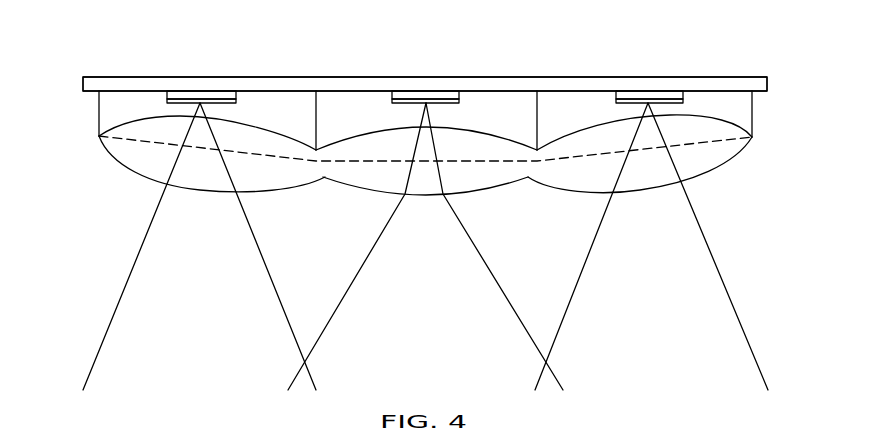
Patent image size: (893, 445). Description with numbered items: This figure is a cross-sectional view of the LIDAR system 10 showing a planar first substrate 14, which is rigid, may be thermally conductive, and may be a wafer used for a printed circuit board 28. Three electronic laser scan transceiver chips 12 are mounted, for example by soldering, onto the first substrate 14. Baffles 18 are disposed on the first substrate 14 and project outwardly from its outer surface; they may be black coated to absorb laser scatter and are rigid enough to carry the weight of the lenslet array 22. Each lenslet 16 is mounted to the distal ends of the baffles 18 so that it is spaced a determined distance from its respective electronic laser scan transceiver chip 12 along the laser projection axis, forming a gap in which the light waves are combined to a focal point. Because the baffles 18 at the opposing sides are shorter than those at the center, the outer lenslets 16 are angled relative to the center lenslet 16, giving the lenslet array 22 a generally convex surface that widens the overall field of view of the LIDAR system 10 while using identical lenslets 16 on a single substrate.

The LIDAR system 10 is at (700, 62).
The electronic laser scan transceiver chip 12 is at (178, 91).
The first substrate 14 is at (517, 77).
The lenslet 16 is at (121, 166).
The baffle 18 is at (99, 117).
The lenslet array 22 is at (760, 186).
The printed circuit board 28 is at (213, 91).